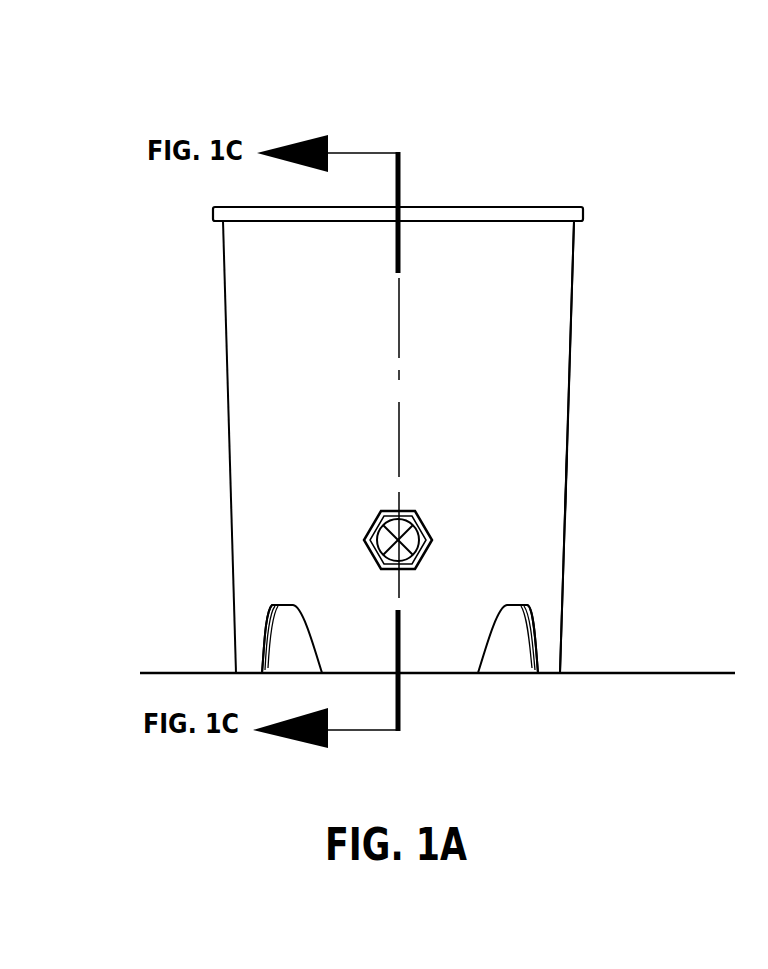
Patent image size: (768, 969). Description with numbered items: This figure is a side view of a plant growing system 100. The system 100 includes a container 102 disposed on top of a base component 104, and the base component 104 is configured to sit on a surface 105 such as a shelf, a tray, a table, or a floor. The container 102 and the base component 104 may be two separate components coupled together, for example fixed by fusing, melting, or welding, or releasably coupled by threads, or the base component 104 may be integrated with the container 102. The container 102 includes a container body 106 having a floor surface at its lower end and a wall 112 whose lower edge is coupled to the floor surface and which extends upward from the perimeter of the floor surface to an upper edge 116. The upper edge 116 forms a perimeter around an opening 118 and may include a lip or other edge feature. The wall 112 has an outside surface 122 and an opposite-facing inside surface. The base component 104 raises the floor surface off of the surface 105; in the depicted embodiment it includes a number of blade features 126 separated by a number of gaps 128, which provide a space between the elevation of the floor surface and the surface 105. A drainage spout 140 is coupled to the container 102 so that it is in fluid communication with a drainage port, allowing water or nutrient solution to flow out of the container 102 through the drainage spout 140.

The plant growing system 100 is at (214, 70).
The container 102 is at (600, 302).
The base component 104 is at (555, 683).
The surface 105 is at (733, 650).
The container body 106 is at (575, 460).
The wall 112 is at (553, 244).
The upper edge 116 is at (204, 206).
The opening 118 is at (465, 196).
The outside surface 122 is at (525, 388).
The blade features 126 is at (443, 600).
The gaps 128 is at (501, 633).
The drainage spout 140 is at (435, 509).